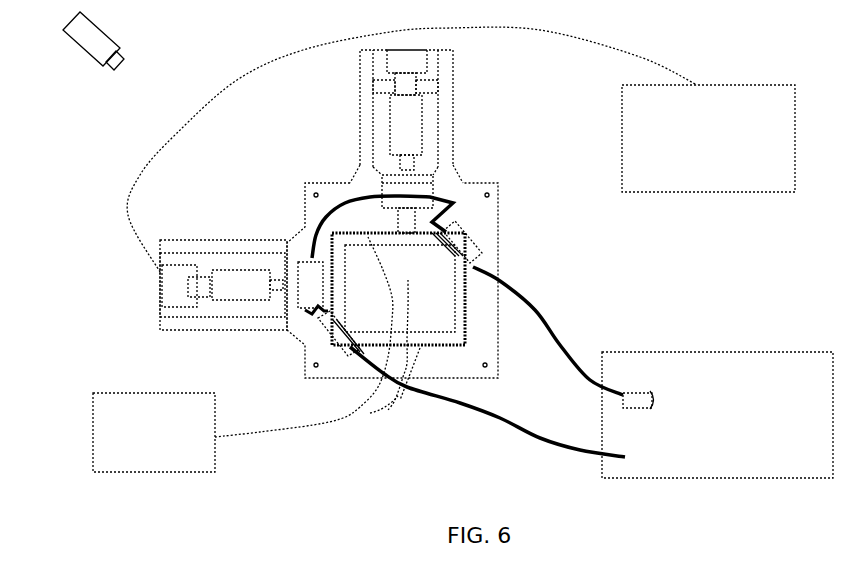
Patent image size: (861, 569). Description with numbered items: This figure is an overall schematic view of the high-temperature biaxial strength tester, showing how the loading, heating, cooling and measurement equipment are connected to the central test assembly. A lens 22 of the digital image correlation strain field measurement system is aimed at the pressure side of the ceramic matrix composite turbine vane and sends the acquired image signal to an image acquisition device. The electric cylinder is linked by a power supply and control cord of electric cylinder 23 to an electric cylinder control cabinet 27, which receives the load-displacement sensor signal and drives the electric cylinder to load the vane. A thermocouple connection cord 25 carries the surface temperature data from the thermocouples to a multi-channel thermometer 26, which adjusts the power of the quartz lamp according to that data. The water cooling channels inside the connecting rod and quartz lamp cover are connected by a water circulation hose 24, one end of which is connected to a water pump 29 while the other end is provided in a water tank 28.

The lens 22 is at (110, 50).
The power supply and control cord of electric cylinder 23 is at (187, 123).
The water circulation hose 24 is at (325, 232).
The thermocouple connection cord 25 is at (313, 425).
The multi-channel thermometer 26 is at (172, 425).
The electric cylinder control cabinet 27 is at (678, 150).
The water tank 28 is at (670, 352).
The water pump 29 is at (653, 398).